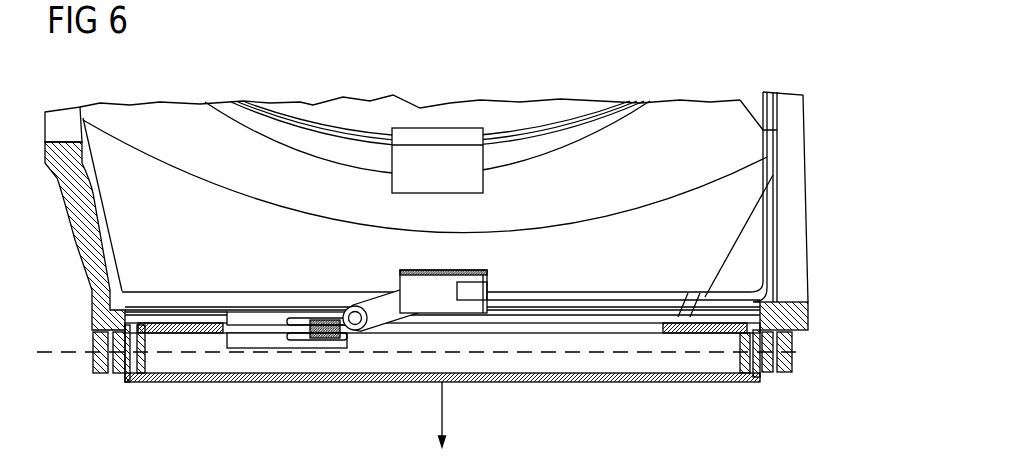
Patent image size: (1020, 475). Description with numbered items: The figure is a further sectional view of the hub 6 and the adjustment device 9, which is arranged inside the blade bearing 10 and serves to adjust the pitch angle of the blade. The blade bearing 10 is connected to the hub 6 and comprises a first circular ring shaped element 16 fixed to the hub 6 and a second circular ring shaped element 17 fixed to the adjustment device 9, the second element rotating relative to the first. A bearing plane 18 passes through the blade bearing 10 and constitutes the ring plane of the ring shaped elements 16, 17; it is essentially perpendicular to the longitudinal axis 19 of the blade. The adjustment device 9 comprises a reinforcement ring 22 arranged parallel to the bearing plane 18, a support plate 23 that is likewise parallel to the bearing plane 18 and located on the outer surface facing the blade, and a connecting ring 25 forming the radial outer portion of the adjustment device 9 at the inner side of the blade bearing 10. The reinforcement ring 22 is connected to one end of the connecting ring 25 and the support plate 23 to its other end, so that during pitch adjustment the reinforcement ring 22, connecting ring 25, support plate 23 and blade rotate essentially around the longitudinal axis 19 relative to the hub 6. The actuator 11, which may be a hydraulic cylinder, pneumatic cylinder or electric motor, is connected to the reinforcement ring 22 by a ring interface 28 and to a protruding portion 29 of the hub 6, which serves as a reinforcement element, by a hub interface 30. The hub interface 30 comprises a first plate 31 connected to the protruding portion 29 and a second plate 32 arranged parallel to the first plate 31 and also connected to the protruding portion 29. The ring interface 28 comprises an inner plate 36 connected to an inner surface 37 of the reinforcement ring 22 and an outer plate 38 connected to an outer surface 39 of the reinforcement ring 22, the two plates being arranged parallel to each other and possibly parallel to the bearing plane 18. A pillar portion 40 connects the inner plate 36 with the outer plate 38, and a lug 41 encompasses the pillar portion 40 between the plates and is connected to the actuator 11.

The hub 6 is at (250, 88).
The adjustment device 9 is at (168, 386).
The blade bearing 10 is at (810, 342).
The first actuator 11 is at (393, 300).
The first circular ring shaped element 16 is at (782, 375).
The second circular ring shaped element 17 is at (792, 355).
The bearing plane 18 is at (70, 348).
The longitudinal axis 19 is at (442, 407).
The reinforcement ring 22 is at (163, 325).
The support plate 23 is at (355, 382).
The connecting ring 25 is at (757, 378).
The ring interface 28 is at (316, 310).
The protruding portion 29 is at (477, 290).
The hub interface 30 is at (470, 252).
The first plate 31 is at (468, 305).
The second plate 32 is at (475, 278).
The inner plate 36 is at (287, 338).
The inner surface 37 is at (175, 318).
The outer plate 38 is at (287, 380).
The outer surface 39 is at (183, 338).
The pillar portion 40 is at (323, 327).
The lug 41 is at (313, 348).